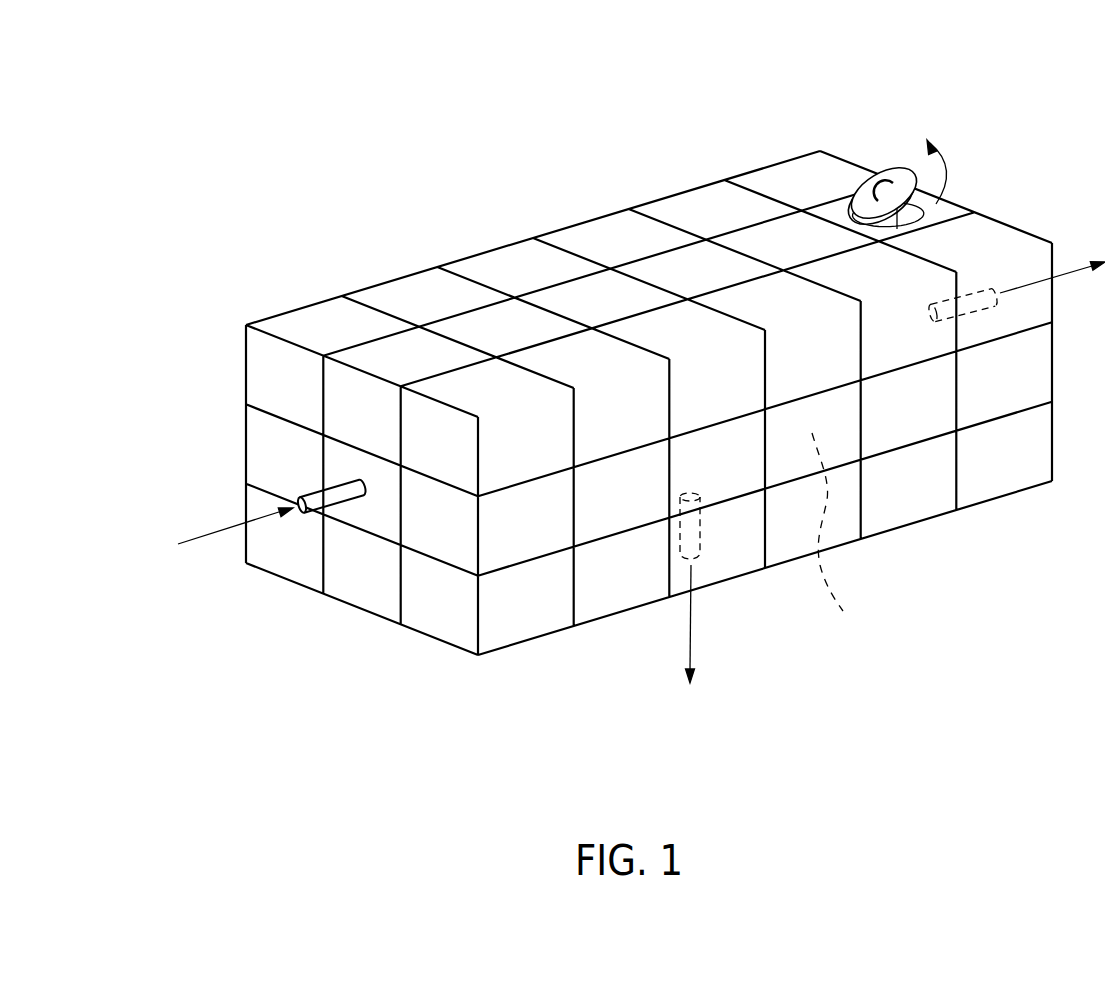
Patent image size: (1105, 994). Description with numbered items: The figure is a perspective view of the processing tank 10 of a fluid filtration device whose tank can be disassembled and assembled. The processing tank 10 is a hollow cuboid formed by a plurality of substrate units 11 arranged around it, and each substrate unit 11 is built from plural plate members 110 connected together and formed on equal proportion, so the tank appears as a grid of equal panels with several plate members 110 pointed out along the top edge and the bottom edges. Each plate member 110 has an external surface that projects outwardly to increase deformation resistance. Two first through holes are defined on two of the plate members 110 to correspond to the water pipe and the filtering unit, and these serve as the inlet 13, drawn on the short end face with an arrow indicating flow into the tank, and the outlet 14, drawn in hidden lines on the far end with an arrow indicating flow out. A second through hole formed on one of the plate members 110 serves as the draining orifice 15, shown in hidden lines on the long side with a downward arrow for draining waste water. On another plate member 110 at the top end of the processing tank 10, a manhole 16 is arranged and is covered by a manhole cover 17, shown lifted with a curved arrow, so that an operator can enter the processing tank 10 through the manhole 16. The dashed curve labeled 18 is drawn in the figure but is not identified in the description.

The processing tank 10 is at (580, 163).
The substrate unit 11 is at (253, 207).
The plate member 110 is at (315, 307).
The inlet 13 is at (366, 482).
The outlet 14 is at (935, 318).
The draining orifice 15 is at (698, 497).
The manhole 16 is at (927, 227).
The manhole cover 17 is at (867, 176).
The internal channel 18 is at (841, 541).